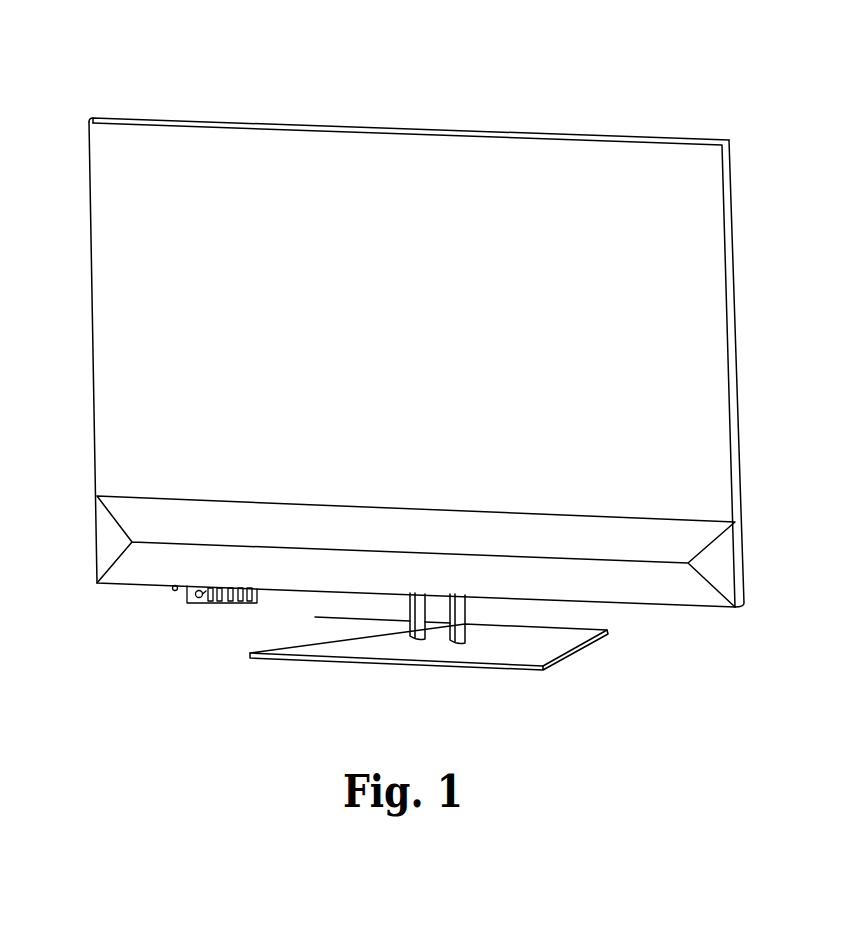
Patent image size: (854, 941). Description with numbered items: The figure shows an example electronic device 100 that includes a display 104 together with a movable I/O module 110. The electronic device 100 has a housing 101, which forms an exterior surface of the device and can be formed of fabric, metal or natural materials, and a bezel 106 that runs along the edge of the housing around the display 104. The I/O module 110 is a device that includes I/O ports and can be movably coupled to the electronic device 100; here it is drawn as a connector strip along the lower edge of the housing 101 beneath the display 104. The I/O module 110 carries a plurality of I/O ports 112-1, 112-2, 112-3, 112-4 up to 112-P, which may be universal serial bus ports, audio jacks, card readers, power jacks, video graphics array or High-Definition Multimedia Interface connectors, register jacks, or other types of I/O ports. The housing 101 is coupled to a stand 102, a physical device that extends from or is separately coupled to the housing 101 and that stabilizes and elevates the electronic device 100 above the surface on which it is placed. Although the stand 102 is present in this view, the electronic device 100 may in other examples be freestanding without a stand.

The electronic device 100 is at (185, 65).
The housing 101 is at (90, 200).
The stand 102 is at (556, 670).
The display 104 is at (413, 352).
The bezel 106 is at (550, 135).
The I/O module 110 is at (240, 608).
The I/O port 112-1 is at (190, 595).
The I/O port 112-2 is at (207, 603).
The I/O port 112-3 is at (216, 603).
The I/O port 112-4 is at (229, 603).
The I/O port 112-P is at (253, 603).